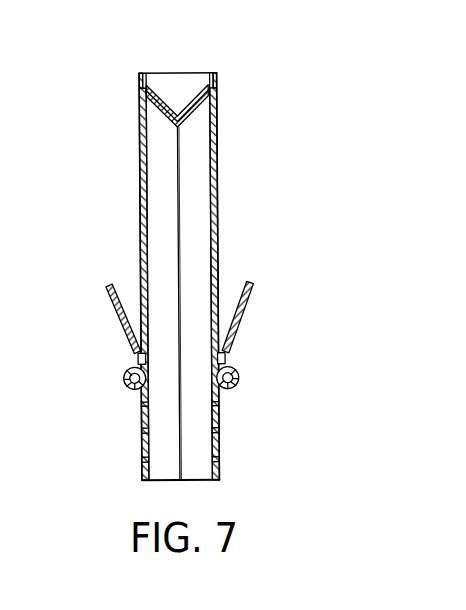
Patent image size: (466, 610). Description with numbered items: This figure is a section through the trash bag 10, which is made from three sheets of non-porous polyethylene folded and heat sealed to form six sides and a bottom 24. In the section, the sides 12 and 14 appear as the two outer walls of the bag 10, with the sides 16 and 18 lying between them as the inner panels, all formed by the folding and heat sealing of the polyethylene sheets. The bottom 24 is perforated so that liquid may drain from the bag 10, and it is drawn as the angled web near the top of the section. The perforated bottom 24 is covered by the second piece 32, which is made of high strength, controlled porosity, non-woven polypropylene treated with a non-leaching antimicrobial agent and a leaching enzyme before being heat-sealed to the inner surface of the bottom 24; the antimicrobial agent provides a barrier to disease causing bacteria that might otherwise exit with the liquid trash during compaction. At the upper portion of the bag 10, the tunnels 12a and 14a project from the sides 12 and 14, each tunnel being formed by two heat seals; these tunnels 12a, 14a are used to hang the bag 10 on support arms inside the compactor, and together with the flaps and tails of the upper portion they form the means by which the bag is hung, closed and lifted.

The trash bag 10 is at (268, 197).
The side 12 is at (141, 254).
The tunnel 12a is at (127, 388).
The side 14 is at (218, 240).
The tunnel 14a is at (233, 387).
The side 16 is at (162, 168).
The side 18 is at (196, 168).
The bottom 24 is at (188, 96).
The second piece 32 is at (214, 100).